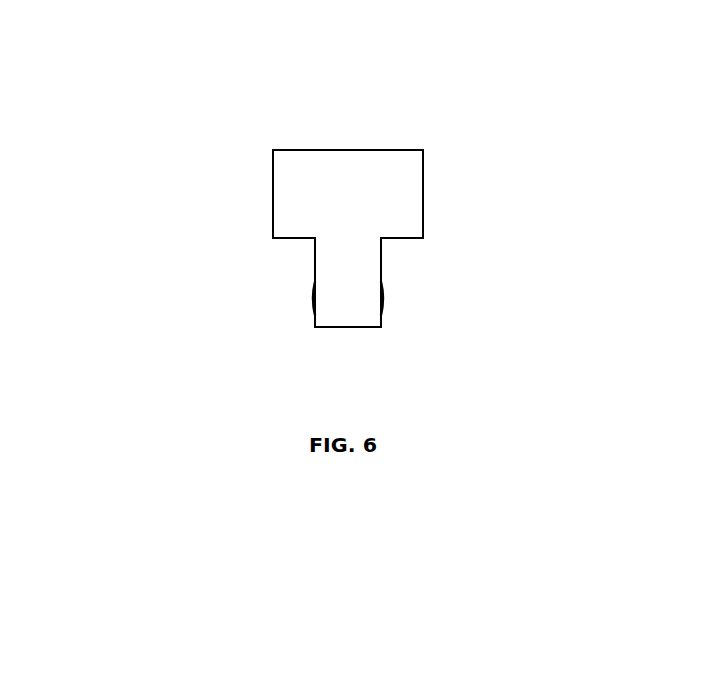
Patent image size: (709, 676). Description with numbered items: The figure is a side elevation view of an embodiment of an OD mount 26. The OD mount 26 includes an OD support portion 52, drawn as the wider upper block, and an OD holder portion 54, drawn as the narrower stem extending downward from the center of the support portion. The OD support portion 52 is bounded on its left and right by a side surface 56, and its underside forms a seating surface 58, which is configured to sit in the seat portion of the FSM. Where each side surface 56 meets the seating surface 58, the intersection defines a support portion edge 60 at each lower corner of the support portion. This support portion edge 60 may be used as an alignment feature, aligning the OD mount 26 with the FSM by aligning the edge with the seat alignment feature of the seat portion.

The OD mount 26 is at (323, 150).
The OD support portion 52 is at (404, 166).
The OD holder portion 54 is at (357, 298).
The side surface 56 is at (273, 188).
The seating surface 58 is at (294, 238).
The support portion edge 60 is at (465, 258).